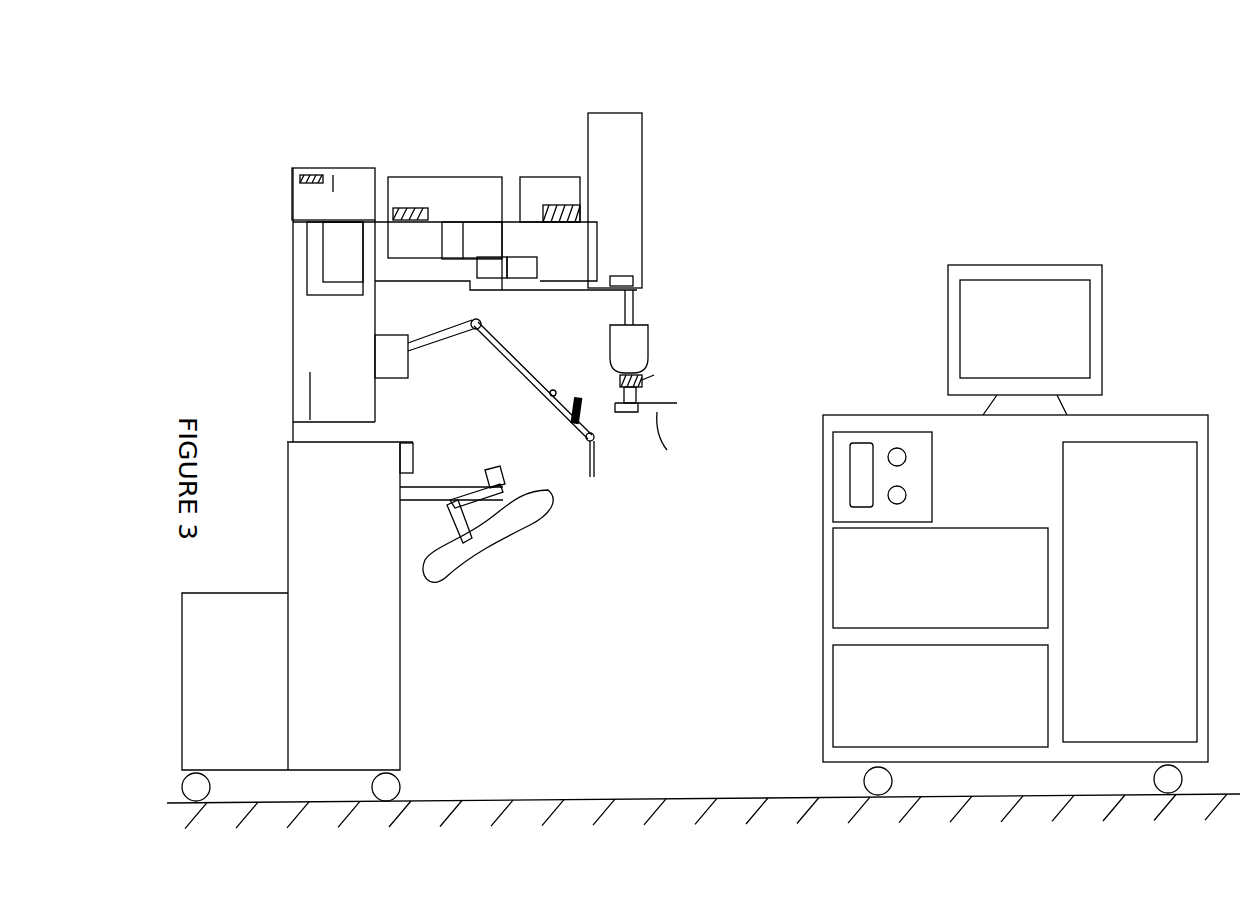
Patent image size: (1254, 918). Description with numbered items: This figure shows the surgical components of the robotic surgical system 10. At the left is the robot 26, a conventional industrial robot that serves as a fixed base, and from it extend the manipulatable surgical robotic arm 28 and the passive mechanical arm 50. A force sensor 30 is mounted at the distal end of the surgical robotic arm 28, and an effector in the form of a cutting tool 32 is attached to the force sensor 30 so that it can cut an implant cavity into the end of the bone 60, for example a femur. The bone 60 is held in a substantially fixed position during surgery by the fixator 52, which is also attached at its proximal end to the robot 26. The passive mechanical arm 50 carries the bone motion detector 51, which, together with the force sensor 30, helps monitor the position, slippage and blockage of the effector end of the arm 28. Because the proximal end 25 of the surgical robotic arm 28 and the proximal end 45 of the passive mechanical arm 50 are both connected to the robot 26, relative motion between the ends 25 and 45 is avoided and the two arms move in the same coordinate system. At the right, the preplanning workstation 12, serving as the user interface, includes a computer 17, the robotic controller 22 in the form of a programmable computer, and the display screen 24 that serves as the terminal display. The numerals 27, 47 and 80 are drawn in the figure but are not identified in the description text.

The system 10 is at (850, 122).
The preplanning workstation 12 is at (1120, 205).
The computer 17 is at (833, 479).
The robotic controller 22 is at (822, 568).
The online display screen 24 is at (1103, 320).
The proximal end of surgical robotic arm 25 is at (387, 288).
The robot arm 26 is at (523, 113).
The instrument base 27 is at (712, 405).
The surgical robotic arm 28 is at (710, 343).
The force sensor 30 is at (657, 383).
The cutting tool 32 is at (661, 448).
The proximal end of passive mechanical arm 45 is at (410, 362).
The arm end effector 47 is at (596, 490).
The passive mechanical arm 50 is at (513, 347).
The bone motion detector 51 is at (578, 398).
The fixator 52 is at (503, 488).
The bone 60 is at (498, 540).
The support bracket 80 is at (417, 455).